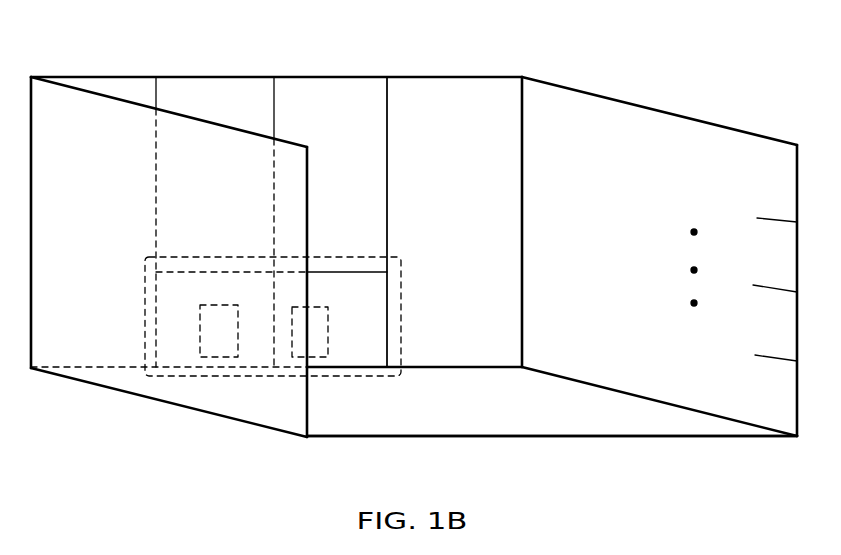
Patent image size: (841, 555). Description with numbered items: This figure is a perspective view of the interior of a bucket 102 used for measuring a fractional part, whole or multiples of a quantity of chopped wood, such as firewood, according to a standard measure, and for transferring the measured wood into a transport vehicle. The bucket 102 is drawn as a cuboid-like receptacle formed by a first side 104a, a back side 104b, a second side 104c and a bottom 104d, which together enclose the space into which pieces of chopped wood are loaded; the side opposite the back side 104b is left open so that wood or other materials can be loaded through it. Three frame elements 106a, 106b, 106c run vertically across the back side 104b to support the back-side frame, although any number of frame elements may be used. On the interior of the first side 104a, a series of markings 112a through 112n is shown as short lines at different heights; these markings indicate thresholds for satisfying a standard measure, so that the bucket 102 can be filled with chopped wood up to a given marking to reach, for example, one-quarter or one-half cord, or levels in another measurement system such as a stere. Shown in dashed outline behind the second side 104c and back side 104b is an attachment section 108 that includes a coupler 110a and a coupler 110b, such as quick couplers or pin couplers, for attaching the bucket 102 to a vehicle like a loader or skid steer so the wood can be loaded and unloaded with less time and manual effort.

The bucket 102 is at (70, 463).
The first side 104a is at (554, 183).
The back side 104b is at (435, 185).
The second side 104c is at (60, 193).
The bottom 104d is at (459, 415).
The frame element 106a is at (155, 93).
The frame element 106b is at (273, 100).
The frame element 106c is at (386, 98).
The attachment section 108 is at (402, 276).
The coupler 110a is at (223, 305).
The coupler 110b is at (318, 306).
The marking 112a is at (755, 355).
The marking 112n is at (757, 218).